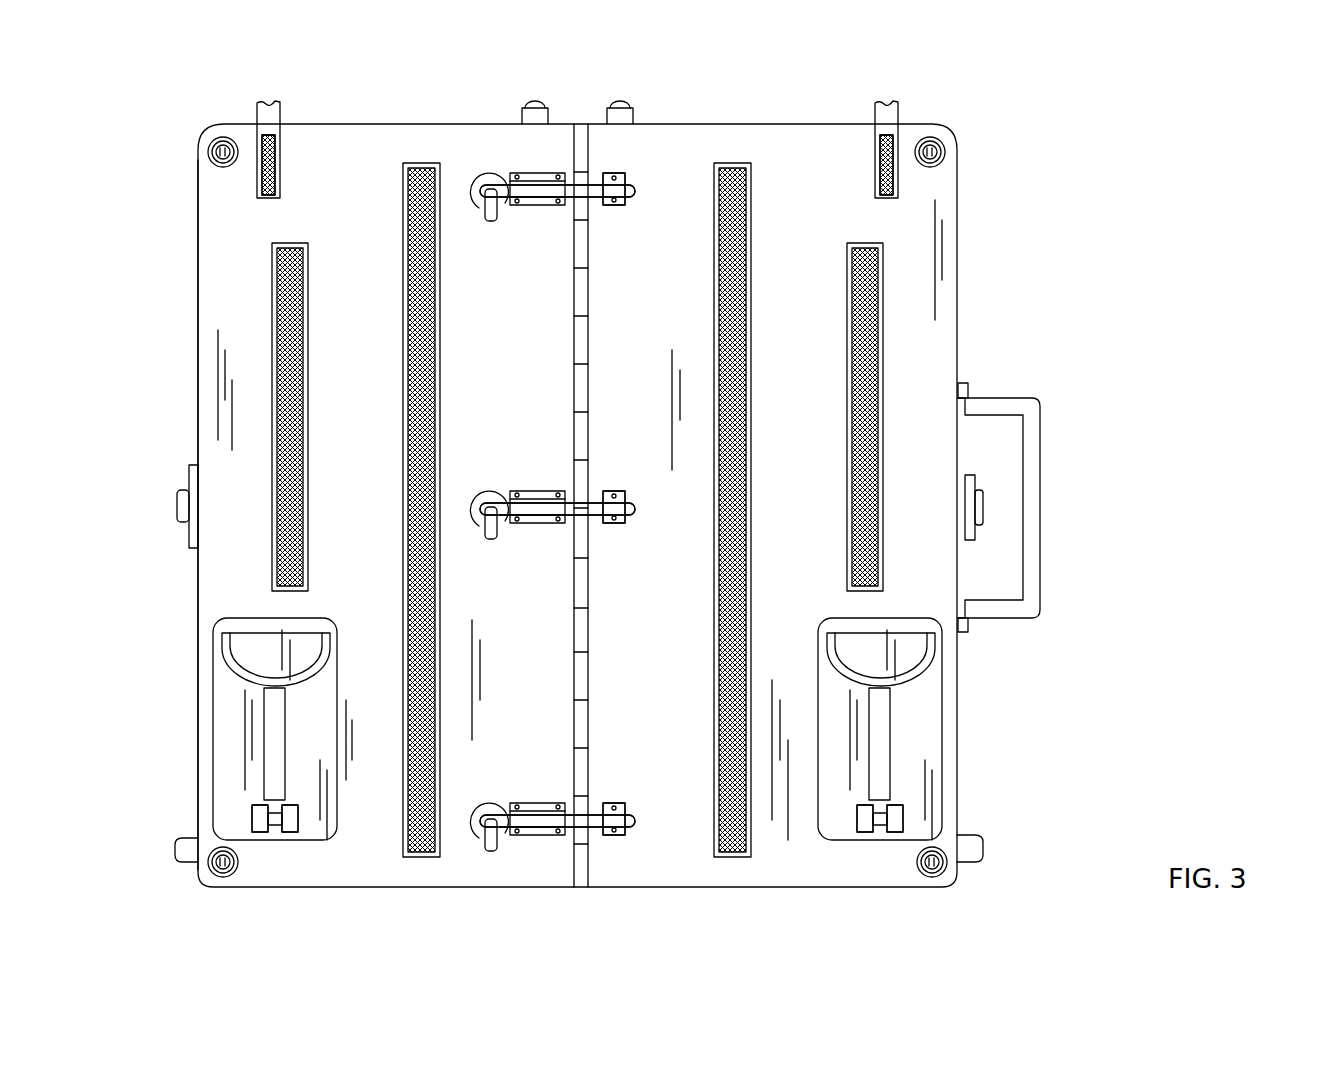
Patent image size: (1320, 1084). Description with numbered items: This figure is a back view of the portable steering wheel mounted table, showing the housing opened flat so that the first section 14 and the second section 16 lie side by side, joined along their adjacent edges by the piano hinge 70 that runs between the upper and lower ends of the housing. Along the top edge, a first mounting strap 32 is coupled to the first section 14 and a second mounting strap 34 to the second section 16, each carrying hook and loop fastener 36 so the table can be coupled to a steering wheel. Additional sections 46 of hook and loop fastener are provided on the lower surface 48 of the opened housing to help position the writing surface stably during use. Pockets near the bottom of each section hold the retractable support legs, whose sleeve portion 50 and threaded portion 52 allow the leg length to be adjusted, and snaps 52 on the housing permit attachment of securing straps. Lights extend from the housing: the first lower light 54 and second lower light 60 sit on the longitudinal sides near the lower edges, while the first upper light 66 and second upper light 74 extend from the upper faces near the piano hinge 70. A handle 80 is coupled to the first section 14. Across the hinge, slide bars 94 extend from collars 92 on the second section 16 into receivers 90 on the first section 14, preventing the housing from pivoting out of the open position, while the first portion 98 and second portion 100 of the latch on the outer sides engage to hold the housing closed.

The first section 14 is at (805, 130).
The second section 16 is at (228, 247).
The first mounting strap 32 is at (890, 102).
The second mounting strap 34 is at (290, 100).
The hook and loop fastener 36 is at (270, 155).
The additional sections of hook and loop fastener 46 is at (422, 170).
The lower surface 48 is at (530, 660).
The sleeve portion 50 is at (272, 718).
The snaps 52 is at (223, 148).
The first lower light 54 is at (972, 840).
The second lower light 60 is at (180, 848).
The first upper light 66 is at (622, 110).
The piano hinge 70 is at (585, 290).
The second upper light 74 is at (525, 110).
The handle 80 is at (1030, 422).
The receivers 90 is at (622, 198).
The collars 92 is at (535, 195).
The slide bars 94 is at (592, 188).
The first portion of the latch 98 is at (968, 478).
The second portion of the latch 100 is at (185, 515).